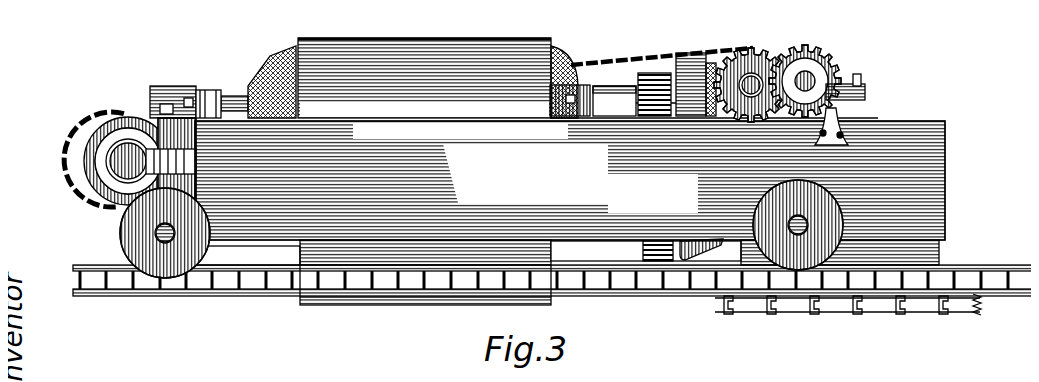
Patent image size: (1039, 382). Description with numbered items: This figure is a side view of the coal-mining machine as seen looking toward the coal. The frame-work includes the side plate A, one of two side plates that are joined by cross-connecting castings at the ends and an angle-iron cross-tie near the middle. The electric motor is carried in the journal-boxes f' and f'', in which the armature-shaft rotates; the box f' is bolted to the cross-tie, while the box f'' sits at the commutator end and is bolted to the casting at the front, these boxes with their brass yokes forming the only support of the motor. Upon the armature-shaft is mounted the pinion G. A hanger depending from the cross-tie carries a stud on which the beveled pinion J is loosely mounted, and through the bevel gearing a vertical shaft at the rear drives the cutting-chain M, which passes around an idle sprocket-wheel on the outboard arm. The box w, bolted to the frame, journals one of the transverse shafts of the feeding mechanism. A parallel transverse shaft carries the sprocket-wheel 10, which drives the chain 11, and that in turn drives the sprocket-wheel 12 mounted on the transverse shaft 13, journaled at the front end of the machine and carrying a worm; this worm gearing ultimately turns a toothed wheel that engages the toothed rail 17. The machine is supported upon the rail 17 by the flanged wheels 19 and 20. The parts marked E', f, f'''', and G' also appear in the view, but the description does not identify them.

The side plate A is at (570, 213).
The cylinder E' is at (413, 78).
The bearing block f is at (555, 101).
The journal-box f' is at (614, 101).
The journal-box f'' is at (185, 89).
The shaft f'''' is at (247, 70).
The pinion G is at (677, 62).
The block G' is at (658, 282).
The beveled pinion J is at (690, 244).
The sprocket-wheel 10 is at (760, 38).
The box w is at (824, 60).
The chain 11 is at (98, 148).
The sprocket-wheel 12 is at (78, 153).
The transverse shaft 13 is at (200, 152).
The toothed rail 17 is at (552, 267).
The flanged wheel 19 is at (165, 233).
The flanged wheel 20 is at (798, 225).
The cutting-chain M is at (974, 298).